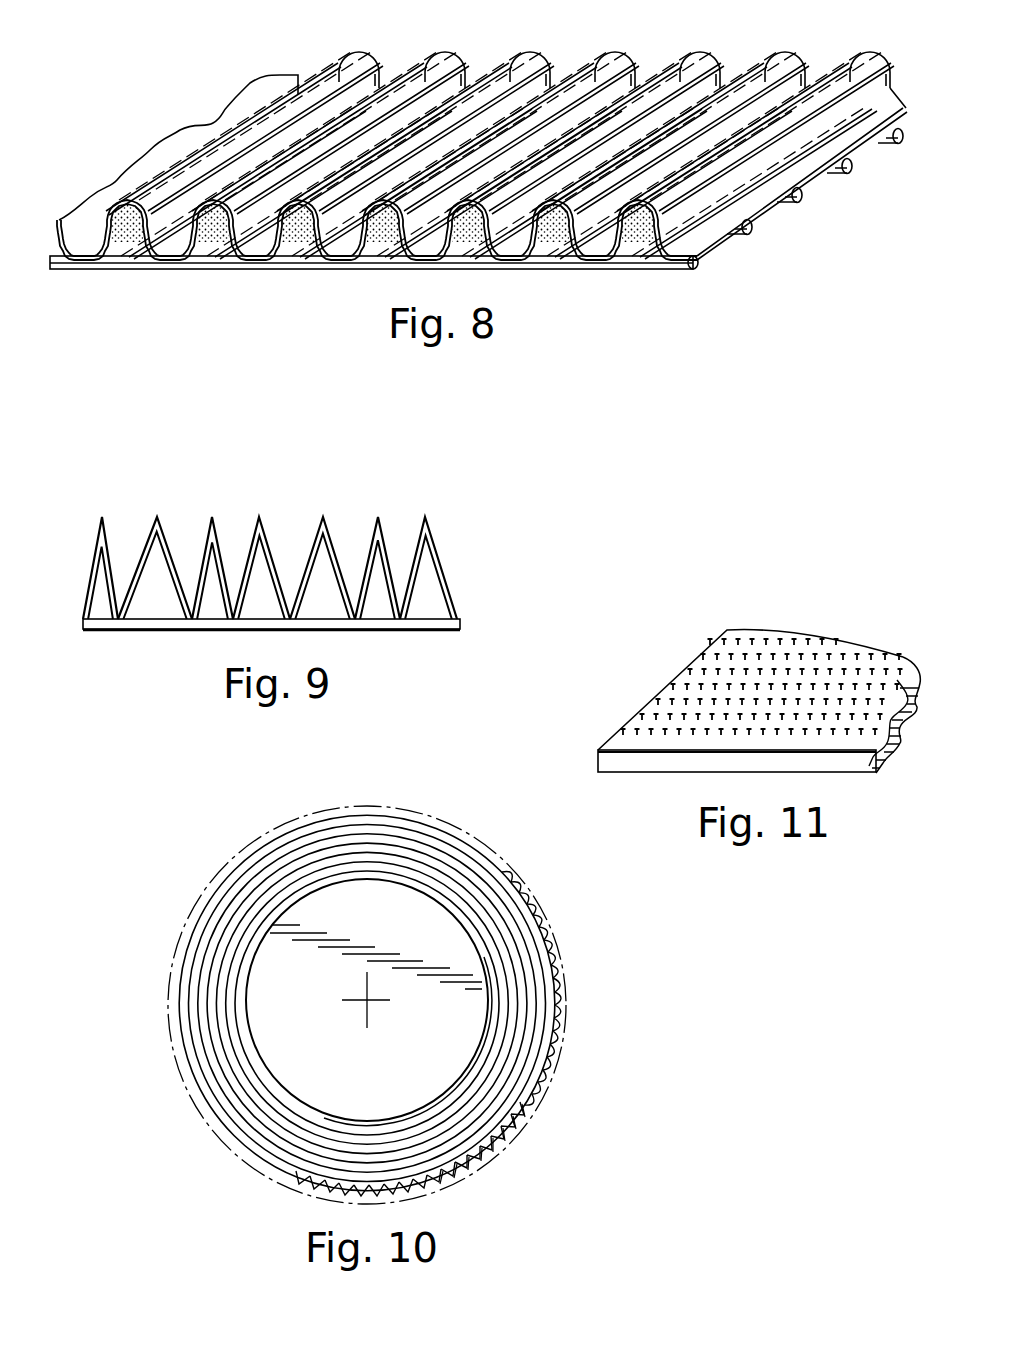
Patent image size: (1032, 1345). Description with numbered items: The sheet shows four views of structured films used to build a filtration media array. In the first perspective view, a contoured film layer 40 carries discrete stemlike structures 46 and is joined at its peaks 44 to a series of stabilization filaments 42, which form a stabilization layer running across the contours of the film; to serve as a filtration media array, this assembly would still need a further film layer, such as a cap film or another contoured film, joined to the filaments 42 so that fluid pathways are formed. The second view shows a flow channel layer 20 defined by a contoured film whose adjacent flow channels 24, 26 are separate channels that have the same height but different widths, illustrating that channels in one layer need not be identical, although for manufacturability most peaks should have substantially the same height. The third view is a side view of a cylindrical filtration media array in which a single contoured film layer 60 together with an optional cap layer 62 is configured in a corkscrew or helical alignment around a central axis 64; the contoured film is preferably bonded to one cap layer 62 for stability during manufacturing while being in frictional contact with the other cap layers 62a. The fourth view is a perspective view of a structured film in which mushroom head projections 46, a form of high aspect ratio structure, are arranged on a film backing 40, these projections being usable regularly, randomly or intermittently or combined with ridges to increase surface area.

In FIG. 9, the flow channel layer 20 is at (322, 550).
In FIG. 9, the flow channel 24 is at (318, 570).
In FIG. 9, the flow channel 26 is at (380, 592).
In FIG. 8, the contoured film layer 40 is at (719, 80).
In FIG. 11, the contoured film layer 40 is at (855, 770).
In FIG. 8, the stabilization filaments 42 is at (798, 201).
In FIG. 8, the peaks 44 is at (577, 268).
In FIG. 8, the stemlike structures 46 is at (213, 233).
In FIG. 11, the stemlike structures 46 is at (755, 655).
In FIG. 10, the contoured film layer 60 is at (553, 1052).
In FIG. 10, the cap layer 62 is at (532, 1088).
In FIG. 10, the cap layers 62a is at (500, 1145).
In FIG. 10, the central axis 64 is at (367, 1000).